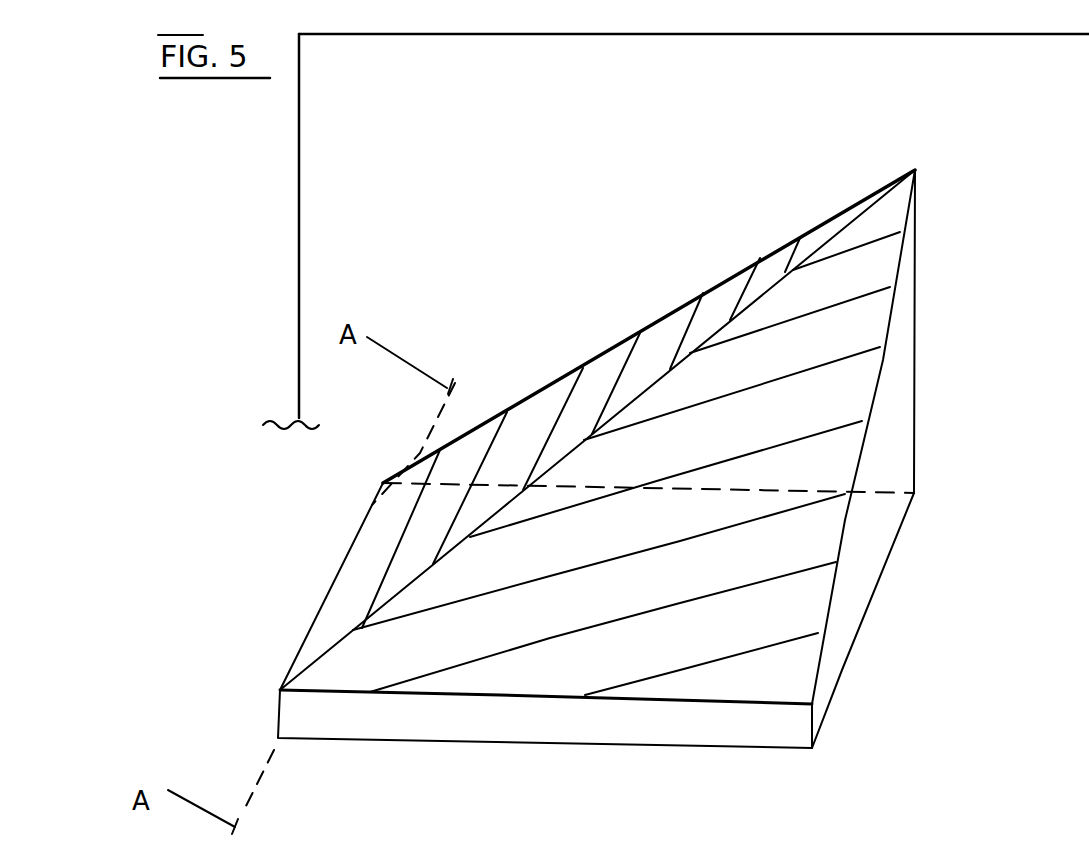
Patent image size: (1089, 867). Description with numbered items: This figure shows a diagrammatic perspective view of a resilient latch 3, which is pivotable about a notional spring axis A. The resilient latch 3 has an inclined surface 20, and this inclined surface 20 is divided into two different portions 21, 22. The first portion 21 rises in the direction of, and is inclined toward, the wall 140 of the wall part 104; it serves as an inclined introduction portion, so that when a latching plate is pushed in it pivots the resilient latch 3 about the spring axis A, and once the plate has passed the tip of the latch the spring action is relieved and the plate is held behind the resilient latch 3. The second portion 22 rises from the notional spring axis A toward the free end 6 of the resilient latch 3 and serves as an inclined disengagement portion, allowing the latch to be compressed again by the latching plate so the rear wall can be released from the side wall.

The resilient latch 3 is at (375, 660).
The free end 6 is at (958, 411).
The inclined surface 20 is at (482, 568).
The first portion 21 is at (795, 592).
The second portion 22 is at (547, 403).
The wall part 104 is at (395, 86).
The wall 140 is at (1030, 136).